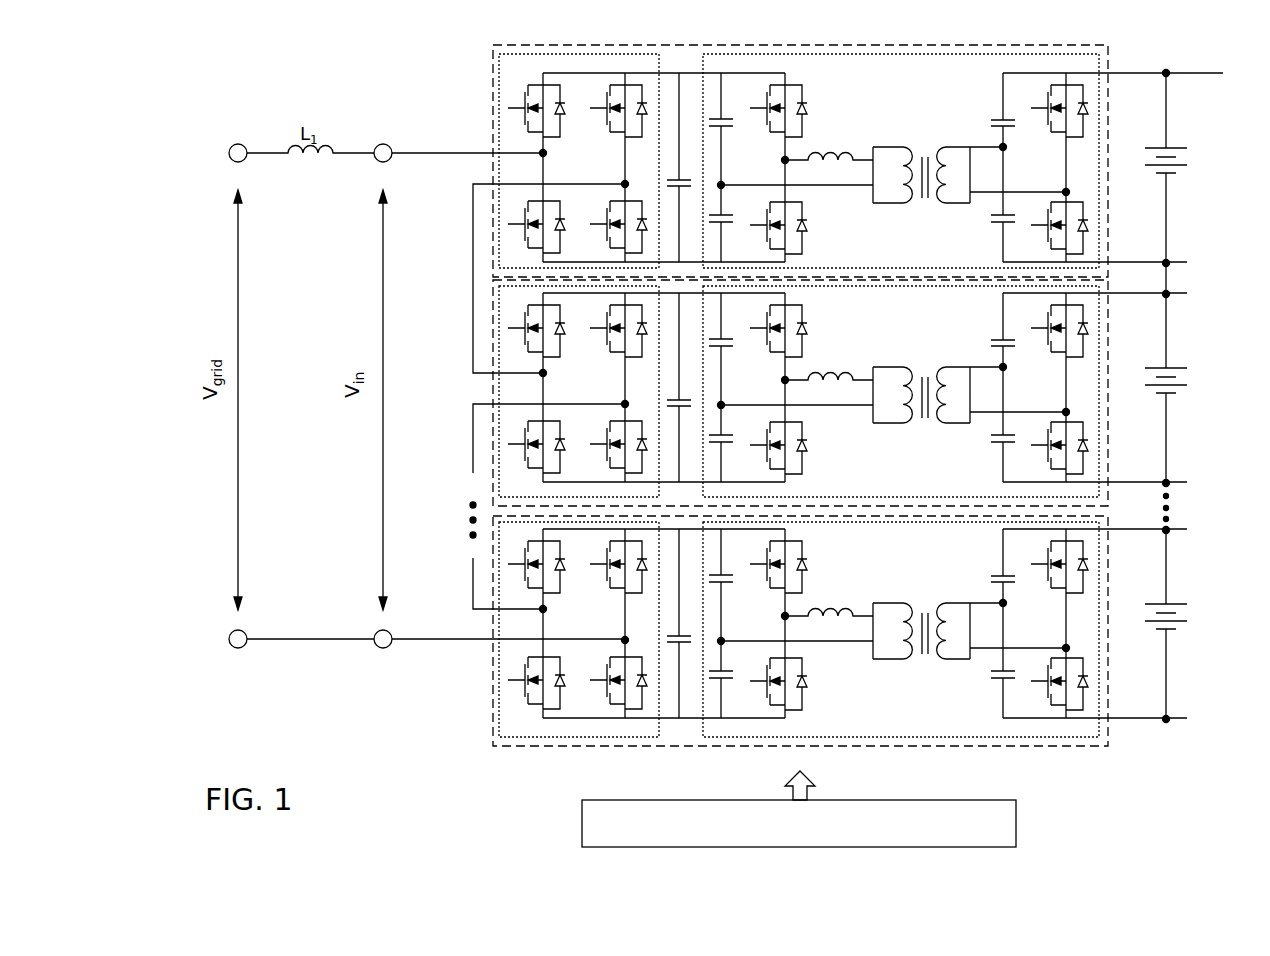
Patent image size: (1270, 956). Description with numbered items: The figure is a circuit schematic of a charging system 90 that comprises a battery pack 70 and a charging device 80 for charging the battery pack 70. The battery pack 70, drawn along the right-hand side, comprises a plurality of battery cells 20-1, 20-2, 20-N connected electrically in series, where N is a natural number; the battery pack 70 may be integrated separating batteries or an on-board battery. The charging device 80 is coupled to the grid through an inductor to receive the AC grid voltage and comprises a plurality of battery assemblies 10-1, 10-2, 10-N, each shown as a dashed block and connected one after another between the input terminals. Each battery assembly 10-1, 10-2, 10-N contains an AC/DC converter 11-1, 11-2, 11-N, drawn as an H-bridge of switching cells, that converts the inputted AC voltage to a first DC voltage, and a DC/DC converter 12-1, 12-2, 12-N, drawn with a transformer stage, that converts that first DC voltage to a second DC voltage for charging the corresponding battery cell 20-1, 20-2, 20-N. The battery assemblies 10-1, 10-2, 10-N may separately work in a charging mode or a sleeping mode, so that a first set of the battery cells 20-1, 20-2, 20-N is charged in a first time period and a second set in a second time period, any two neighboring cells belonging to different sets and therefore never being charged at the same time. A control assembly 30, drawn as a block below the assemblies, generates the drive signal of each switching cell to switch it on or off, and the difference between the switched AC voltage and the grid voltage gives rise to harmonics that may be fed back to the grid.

The charging system 90 is at (394, 85).
The battery assembly 10-1 is at (796, 162).
The battery assembly 10-2 is at (796, 397).
The battery assembly 10-N is at (796, 632).
The AC/DC converter 11-1 is at (498, 205).
The AC/DC converter 11-2 is at (498, 443).
The AC/DC converter 11-N is at (498, 677).
The DC/DC converter 12-1 is at (1099, 178).
The DC/DC converter 12-2 is at (1099, 398).
The DC/DC converter 12-N is at (1099, 630).
The battery cell 20-1 is at (1172, 174).
The battery cell 20-2 is at (1172, 394).
The battery cell 20-N is at (1172, 630).
The control assembly 30 is at (1018, 820).
The battery pack 70 is at (1197, 513).
The charging device 80 is at (459, 542).